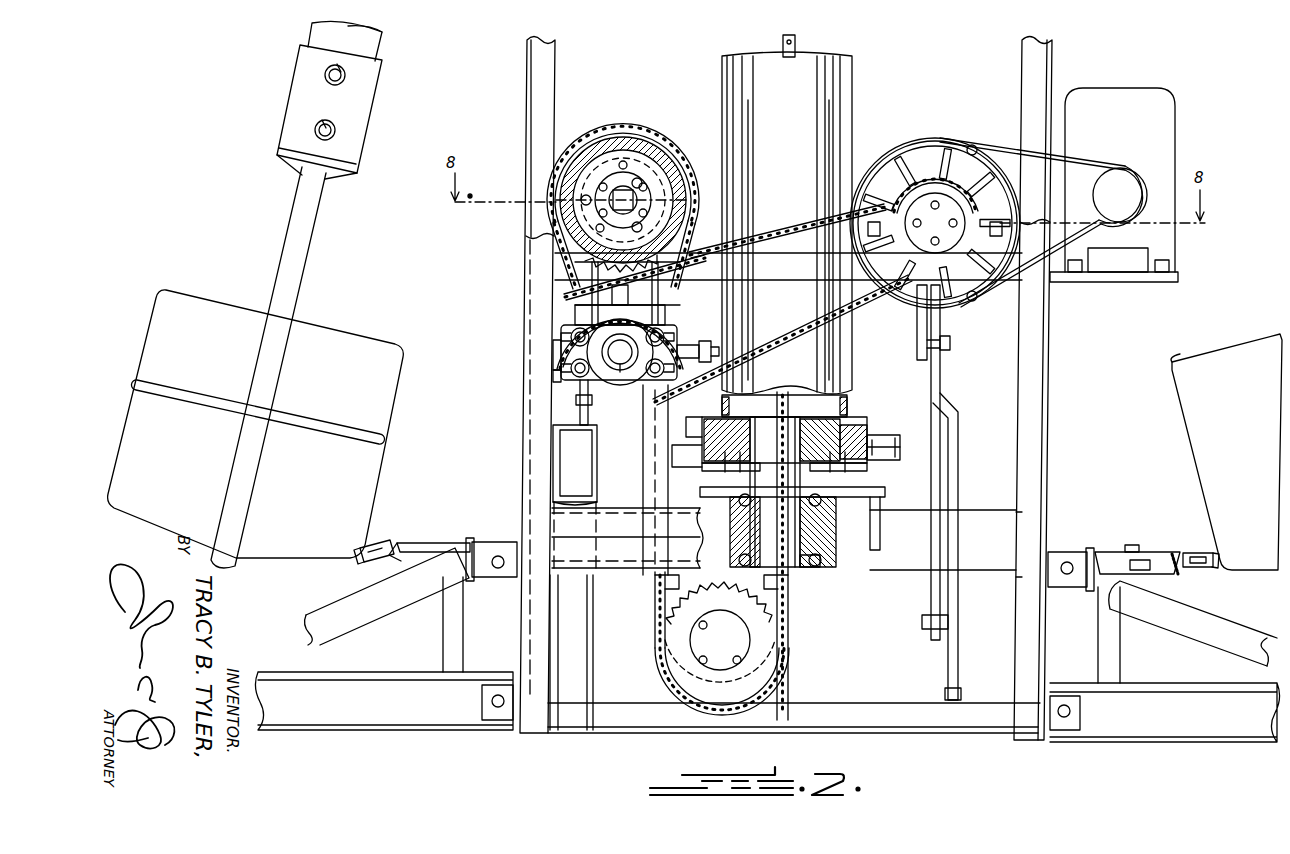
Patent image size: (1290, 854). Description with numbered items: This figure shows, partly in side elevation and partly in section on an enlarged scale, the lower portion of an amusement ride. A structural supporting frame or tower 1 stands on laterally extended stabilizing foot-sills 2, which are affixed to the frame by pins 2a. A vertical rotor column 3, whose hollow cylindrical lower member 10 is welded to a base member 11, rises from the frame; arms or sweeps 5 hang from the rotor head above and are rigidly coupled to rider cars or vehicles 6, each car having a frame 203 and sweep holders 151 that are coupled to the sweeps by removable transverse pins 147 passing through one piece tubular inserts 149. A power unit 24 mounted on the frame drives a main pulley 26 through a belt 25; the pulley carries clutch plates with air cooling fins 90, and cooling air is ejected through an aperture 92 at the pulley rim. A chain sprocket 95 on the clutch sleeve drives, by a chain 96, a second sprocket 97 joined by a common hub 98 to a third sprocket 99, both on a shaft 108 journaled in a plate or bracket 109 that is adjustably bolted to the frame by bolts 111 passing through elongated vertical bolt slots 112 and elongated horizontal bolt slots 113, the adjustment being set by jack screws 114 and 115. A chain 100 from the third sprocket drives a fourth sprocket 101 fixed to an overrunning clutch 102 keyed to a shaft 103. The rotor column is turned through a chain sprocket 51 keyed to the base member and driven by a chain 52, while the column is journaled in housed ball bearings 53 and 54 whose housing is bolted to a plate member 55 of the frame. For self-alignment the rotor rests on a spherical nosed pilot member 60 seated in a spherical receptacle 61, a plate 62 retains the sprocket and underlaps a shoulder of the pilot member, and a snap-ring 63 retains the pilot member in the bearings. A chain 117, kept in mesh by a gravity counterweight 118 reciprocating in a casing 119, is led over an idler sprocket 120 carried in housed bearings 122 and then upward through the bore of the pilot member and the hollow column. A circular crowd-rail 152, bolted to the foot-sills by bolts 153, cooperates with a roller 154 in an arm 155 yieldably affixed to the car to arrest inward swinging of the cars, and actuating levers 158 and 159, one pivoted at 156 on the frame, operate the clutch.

The supporting frame or tower 1 is at (1050, 72).
The stabilizing foot-sills 2 is at (378, 714).
The pins 2a is at (1064, 715).
The vertical rotor column 3 is at (846, 130).
The arms or sweeps 5 is at (374, 44).
The rider cars or vehicles 6 is at (372, 350).
The hollow cylindrical lower member 10 is at (734, 88).
The base member 11 is at (719, 420).
The power unit 24 is at (1130, 102).
The belt 25 is at (1074, 166).
The main pulley 26 is at (955, 144).
The chain sprocket 51 is at (865, 426).
The chain 52 is at (896, 438).
The housed ball bearing 53 is at (830, 520).
The housed ball bearing 54 is at (820, 558).
The plate member 55 is at (882, 505).
The spherical nosed pilot member 60 is at (830, 426).
The spherical receptacle 61 is at (808, 430).
The plate 62 is at (865, 470).
The snap-ring 63 is at (808, 564).
The air cooling fins 90 is at (911, 156).
The aperture 92 is at (935, 151).
The chain sprocket 95 is at (832, 208).
The chain 96 is at (786, 339).
The second sprocket 97 is at (574, 400).
The common hub 98 is at (622, 372).
The third sprocket 99 is at (560, 359).
The chain 100 is at (595, 140).
The fourth sprocket 101 is at (548, 177).
The overrunning clutch 102 is at (620, 180).
The shaft 103 is at (642, 184).
The shaft 108 is at (620, 370).
The plate or bracket 109 is at (558, 351).
The bolts 111 is at (565, 338).
The elongated vertical bolt slots 112 is at (558, 380).
The elongated horizontal bolt slots 113 is at (553, 371).
The jack screw 114 is at (696, 347).
The jack screw 115 is at (660, 292).
The chain 117 is at (782, 33).
The gravity counterweight 118 is at (576, 415).
The casing 119 is at (553, 460).
The idler sprocket 120 is at (690, 676).
The housed bearings 122 is at (695, 614).
The transverse pins 147 is at (332, 124).
The tubular inserts 149 is at (352, 73).
The sweep holders 151 is at (296, 103).
The circular crowd-rail 152 is at (413, 555).
The bolts 153 is at (1127, 545).
The roller 154 is at (382, 541).
The arm 155 is at (358, 558).
The pivot 156 is at (950, 343).
The actuating lever 158 is at (950, 649).
The actuating lever 159 is at (930, 603).
The car frame 203 is at (300, 263).